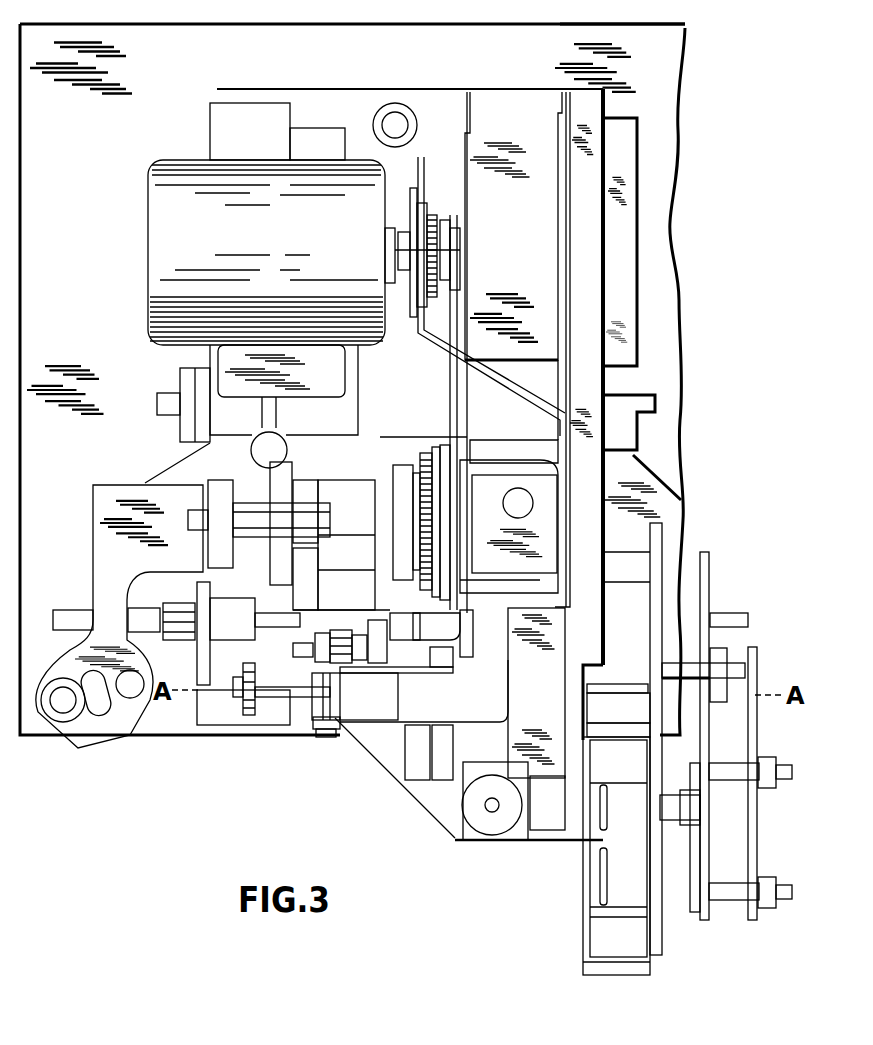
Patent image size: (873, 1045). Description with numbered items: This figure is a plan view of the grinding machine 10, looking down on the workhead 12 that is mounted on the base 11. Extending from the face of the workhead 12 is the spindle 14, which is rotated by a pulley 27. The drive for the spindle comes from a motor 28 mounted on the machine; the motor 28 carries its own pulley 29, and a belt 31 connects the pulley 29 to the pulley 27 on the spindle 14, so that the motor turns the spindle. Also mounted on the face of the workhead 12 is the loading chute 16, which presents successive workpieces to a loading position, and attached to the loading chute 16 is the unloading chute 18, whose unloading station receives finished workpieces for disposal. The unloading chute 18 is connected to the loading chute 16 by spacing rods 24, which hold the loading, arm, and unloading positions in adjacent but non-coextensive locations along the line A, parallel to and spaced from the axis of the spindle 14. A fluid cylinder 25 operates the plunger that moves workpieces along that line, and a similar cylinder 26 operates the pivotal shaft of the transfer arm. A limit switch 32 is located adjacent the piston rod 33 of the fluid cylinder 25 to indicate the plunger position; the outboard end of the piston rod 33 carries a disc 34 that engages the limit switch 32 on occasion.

The grinding machine 10 is at (683, 218).
The base 11 is at (637, 45).
The workhead 12 is at (508, 102).
The spindle 14 is at (252, 502).
The loading chute 16 is at (590, 945).
The unloading chute 18 is at (737, 835).
The spacing rods 24 is at (670, 662).
The fluid cylinder 25 is at (378, 700).
The cylinder 26 is at (492, 820).
The pulley 27 is at (422, 470).
The motor 28 is at (160, 260).
The pulley 29 is at (443, 227).
The belt 31 is at (449, 372).
The limit switch 32 is at (317, 706).
The piston rod 33 is at (280, 698).
The disc 34 is at (242, 712).